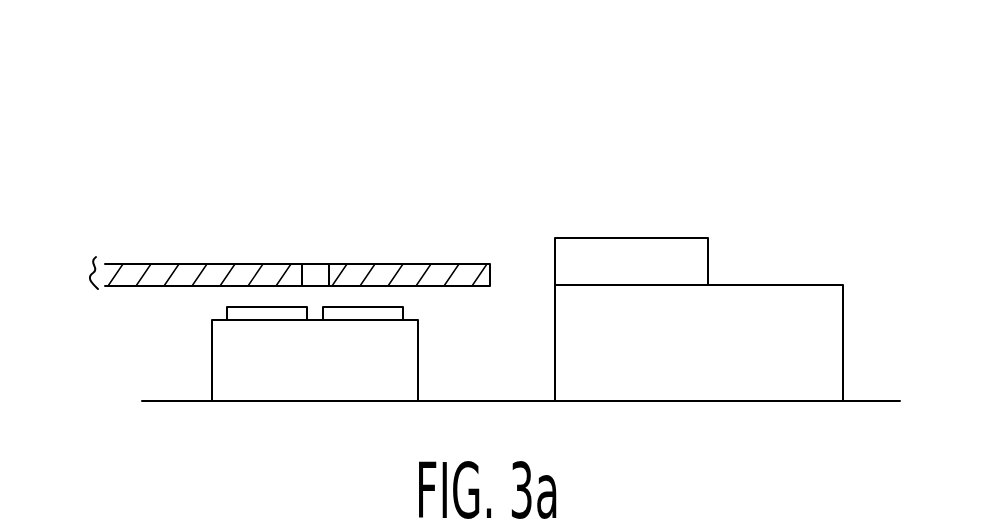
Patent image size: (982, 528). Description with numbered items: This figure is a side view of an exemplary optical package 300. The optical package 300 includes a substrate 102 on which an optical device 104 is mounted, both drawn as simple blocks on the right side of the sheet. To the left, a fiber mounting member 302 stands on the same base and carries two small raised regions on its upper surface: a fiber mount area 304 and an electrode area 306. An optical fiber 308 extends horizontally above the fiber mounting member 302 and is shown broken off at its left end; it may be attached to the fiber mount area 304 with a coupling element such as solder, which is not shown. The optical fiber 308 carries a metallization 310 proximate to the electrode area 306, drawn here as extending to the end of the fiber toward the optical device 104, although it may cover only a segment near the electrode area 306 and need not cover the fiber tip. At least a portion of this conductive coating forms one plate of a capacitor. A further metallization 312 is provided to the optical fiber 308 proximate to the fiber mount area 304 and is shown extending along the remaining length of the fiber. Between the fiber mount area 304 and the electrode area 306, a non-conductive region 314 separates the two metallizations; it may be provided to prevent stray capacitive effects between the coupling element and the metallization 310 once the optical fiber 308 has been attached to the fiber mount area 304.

The optical package 300 is at (260, 97).
The fiber mounting member 302 is at (212, 368).
The fiber mount area 304 is at (227, 310).
The electrode area 306 is at (406, 308).
The optical fiber 308 is at (114, 265).
The metallization 310 is at (418, 272).
The metallization 312 is at (225, 270).
The non-conductive region 314 is at (313, 270).
The substrate 102 is at (796, 292).
The optical device 104 is at (617, 238).